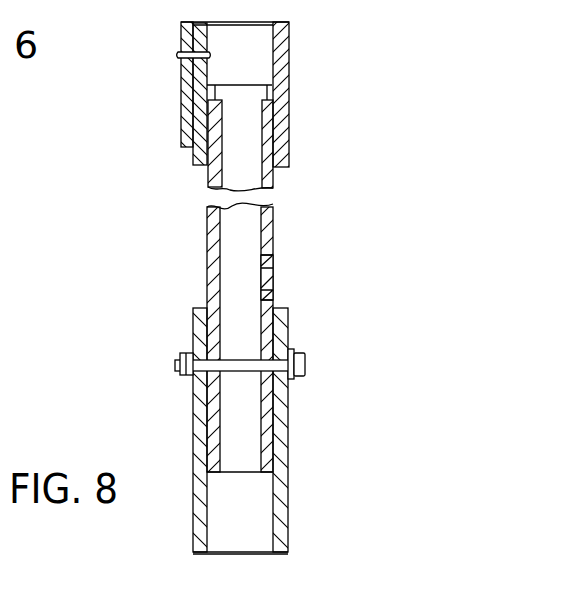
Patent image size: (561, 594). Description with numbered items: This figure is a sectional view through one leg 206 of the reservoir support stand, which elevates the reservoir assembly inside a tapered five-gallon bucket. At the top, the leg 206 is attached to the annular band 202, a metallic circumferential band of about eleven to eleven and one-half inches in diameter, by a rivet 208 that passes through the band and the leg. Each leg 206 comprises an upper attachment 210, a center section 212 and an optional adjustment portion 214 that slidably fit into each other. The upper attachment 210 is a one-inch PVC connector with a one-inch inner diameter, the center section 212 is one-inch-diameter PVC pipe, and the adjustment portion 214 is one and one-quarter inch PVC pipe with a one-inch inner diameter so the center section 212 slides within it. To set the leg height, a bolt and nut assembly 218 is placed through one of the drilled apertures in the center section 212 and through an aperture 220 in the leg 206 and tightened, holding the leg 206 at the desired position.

The annular band 202 is at (182, 105).
The leg 206 is at (193, 552).
The rivet 208 is at (175, 54).
The upper attachment 210 is at (289, 80).
The center section 212 is at (207, 244).
The adjustment portion 214 is at (288, 459).
The bolt and nut assembly 218 is at (176, 374).
The aperture 220 is at (274, 289).